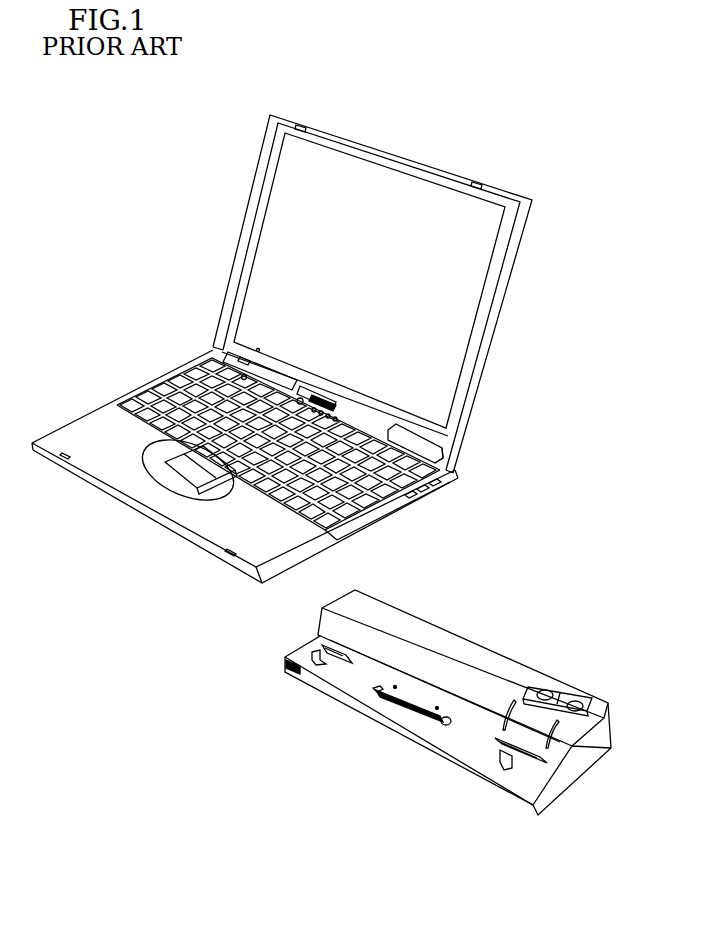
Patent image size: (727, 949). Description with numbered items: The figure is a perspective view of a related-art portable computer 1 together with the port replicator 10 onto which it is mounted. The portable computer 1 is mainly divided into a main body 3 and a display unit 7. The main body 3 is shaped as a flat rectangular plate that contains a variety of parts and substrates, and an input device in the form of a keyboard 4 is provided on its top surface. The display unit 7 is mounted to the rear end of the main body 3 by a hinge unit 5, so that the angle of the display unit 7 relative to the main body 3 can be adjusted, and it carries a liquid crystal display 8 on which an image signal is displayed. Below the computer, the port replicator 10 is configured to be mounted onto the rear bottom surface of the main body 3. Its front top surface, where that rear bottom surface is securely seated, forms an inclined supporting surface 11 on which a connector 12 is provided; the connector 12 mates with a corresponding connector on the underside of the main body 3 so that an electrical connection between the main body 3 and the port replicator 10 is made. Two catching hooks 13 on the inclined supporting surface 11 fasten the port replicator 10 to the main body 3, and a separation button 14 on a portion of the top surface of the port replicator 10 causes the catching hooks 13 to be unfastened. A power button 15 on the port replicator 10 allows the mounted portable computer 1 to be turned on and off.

The portable computer 1 is at (227, 218).
The main body 3 is at (75, 433).
The keyboard 4 is at (200, 393).
The hinge unit 5 is at (438, 448).
The display unit 7 is at (428, 163).
The liquid crystal display 8 is at (478, 245).
The port replicator 10 is at (467, 621).
The inclined supporting surface 11 is at (460, 732).
The connector 12 is at (402, 712).
The catching hook 13 is at (512, 770).
The separation button 14 is at (546, 690).
The power button 15 is at (590, 704).